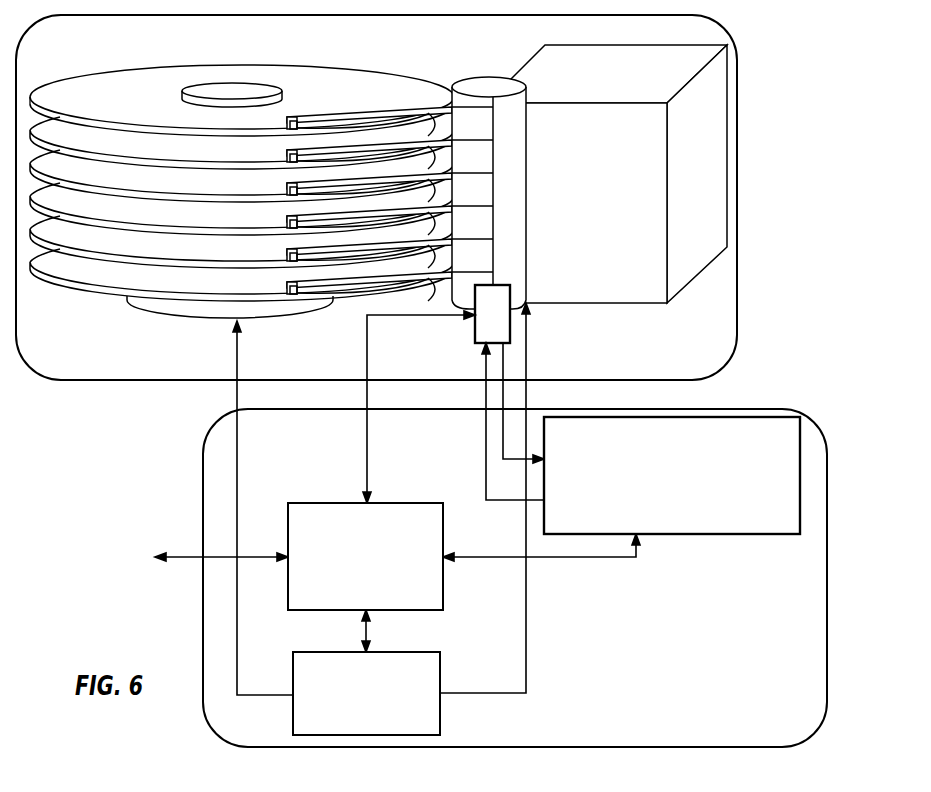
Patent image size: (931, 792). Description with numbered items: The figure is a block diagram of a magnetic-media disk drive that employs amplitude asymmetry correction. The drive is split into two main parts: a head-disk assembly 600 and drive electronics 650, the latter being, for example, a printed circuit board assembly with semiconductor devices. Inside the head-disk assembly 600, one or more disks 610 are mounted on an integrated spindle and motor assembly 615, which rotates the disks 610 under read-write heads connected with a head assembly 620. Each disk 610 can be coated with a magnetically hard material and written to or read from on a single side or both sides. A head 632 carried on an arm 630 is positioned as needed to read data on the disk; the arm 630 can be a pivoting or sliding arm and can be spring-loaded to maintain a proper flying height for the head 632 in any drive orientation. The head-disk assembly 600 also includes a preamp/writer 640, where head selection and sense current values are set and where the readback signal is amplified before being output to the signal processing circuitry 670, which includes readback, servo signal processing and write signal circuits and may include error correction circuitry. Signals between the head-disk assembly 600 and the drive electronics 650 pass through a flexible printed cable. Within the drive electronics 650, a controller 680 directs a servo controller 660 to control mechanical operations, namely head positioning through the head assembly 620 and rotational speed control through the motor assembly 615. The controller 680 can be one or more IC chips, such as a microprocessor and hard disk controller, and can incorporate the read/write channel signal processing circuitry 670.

The head-disk assembly (HDA) 600 is at (660, 356).
The disks 610 is at (122, 60).
The integrated spindle and motor assembly 615 is at (183, 322).
The head assembly 620 is at (501, 58).
The arm 630 is at (375, 107).
The head 632 is at (291, 115).
The preamp/writer 640 is at (474, 331).
The drive electronics 650 is at (660, 716).
The servo controller 660 is at (431, 652).
The signal processing circuitry (read/write channel) 670 is at (728, 535).
The controller 680 is at (382, 503).